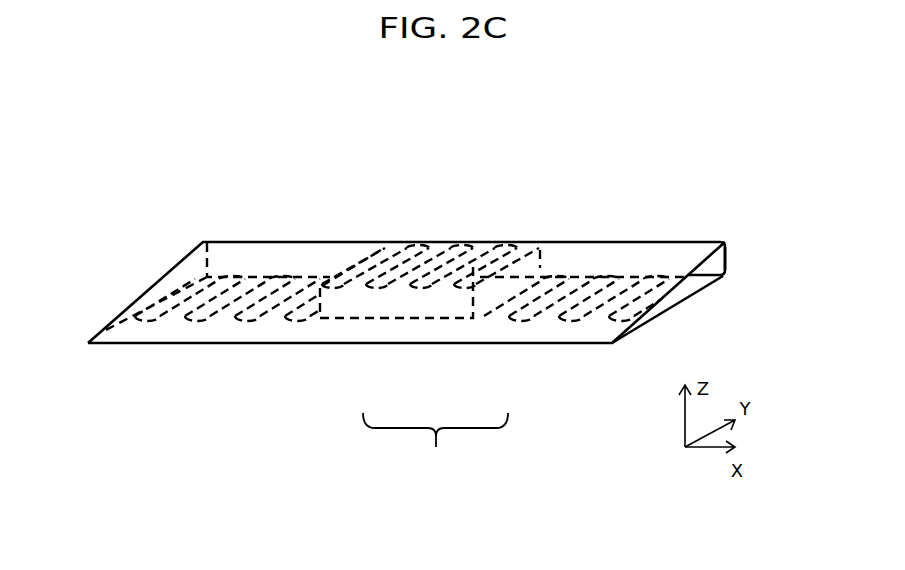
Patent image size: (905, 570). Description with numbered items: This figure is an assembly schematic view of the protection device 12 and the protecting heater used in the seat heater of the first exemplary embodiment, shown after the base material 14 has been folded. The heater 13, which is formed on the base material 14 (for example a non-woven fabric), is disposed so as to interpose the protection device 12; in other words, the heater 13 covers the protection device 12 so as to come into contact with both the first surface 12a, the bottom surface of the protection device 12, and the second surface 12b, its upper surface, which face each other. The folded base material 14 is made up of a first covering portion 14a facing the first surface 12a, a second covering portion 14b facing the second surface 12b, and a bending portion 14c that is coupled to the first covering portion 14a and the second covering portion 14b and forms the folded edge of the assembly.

The protection device 12 is at (435, 448).
The first surface 12a is at (383, 320).
The second surface 12b is at (427, 268).
The heater 13 is at (592, 277).
The base material 14 is at (177, 263).
The first covering portion 14a is at (697, 287).
The second covering portion 14b is at (638, 263).
The bending portion 14c is at (710, 260).